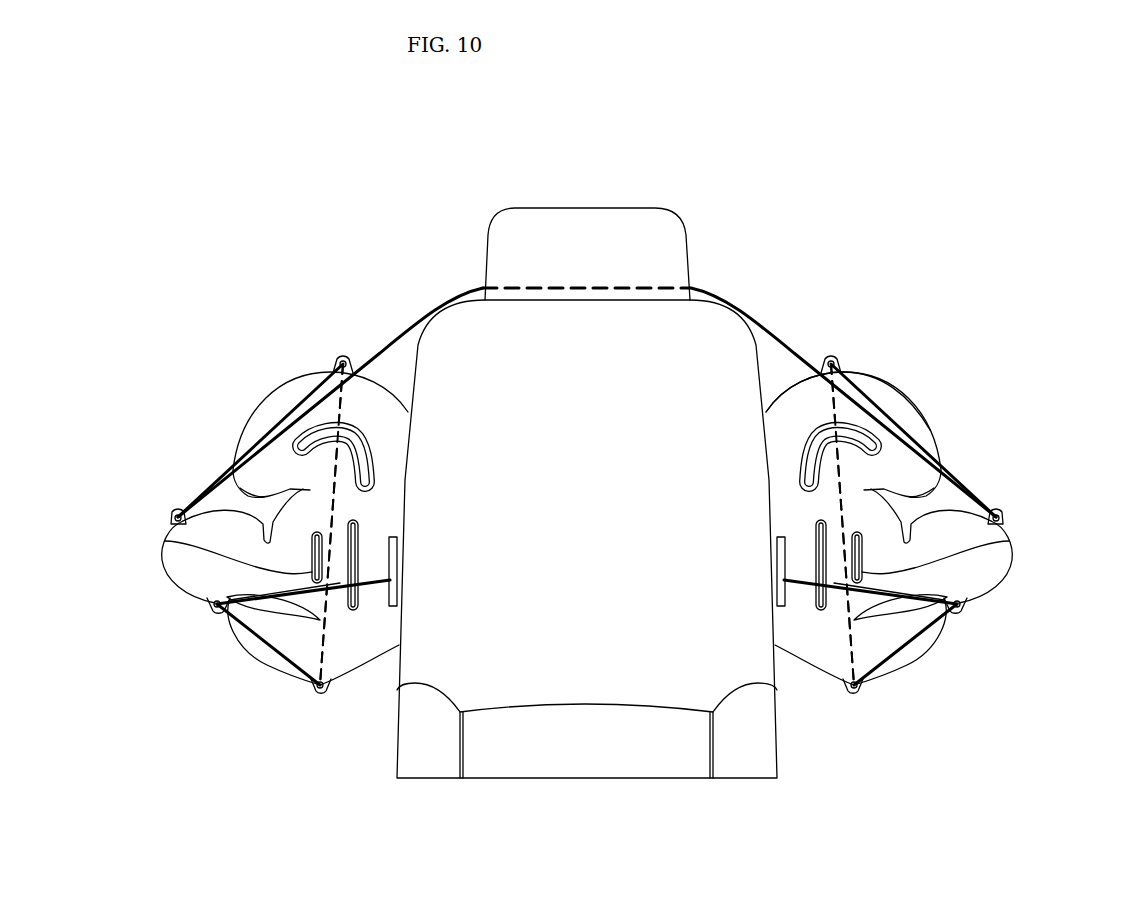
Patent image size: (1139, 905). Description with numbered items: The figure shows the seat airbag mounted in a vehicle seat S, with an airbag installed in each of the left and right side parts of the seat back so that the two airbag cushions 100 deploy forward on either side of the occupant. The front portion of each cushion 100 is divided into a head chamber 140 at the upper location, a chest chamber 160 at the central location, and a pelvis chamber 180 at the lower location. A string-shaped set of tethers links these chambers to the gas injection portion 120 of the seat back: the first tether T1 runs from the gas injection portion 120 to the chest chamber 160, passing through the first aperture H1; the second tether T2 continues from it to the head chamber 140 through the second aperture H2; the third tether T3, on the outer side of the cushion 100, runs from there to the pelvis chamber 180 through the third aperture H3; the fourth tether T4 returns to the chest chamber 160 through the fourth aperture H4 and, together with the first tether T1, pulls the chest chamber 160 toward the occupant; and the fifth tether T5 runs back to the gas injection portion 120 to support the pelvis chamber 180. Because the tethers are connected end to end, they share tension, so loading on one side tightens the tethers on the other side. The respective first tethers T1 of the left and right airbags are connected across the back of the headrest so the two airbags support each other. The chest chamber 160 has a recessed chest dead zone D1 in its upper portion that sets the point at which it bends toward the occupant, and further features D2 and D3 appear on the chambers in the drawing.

The seat S is at (549, 663).
The airbag cushion 100 is at (795, 397).
The gas injection portion 120 is at (783, 597).
The head chamber 140 is at (586, 452).
The chest chamber 160 is at (587, 577).
The pelvis chamber 180 is at (585, 664).
The first tether T1 is at (587, 349).
The second tether T2 is at (587, 430).
The third tether T3 is at (589, 489).
The fourth tether T4 is at (587, 676).
The fifth tether T5 is at (373, 583).
The first aperture H1 is at (586, 487).
The second aperture H2 is at (343, 357).
The third aperture H3 is at (592, 736).
The fourth aperture H4 is at (587, 640).
The chest dead zone D1 is at (588, 462).
The second vent hole D2 is at (366, 427).
The third vent hole D3 is at (588, 565).